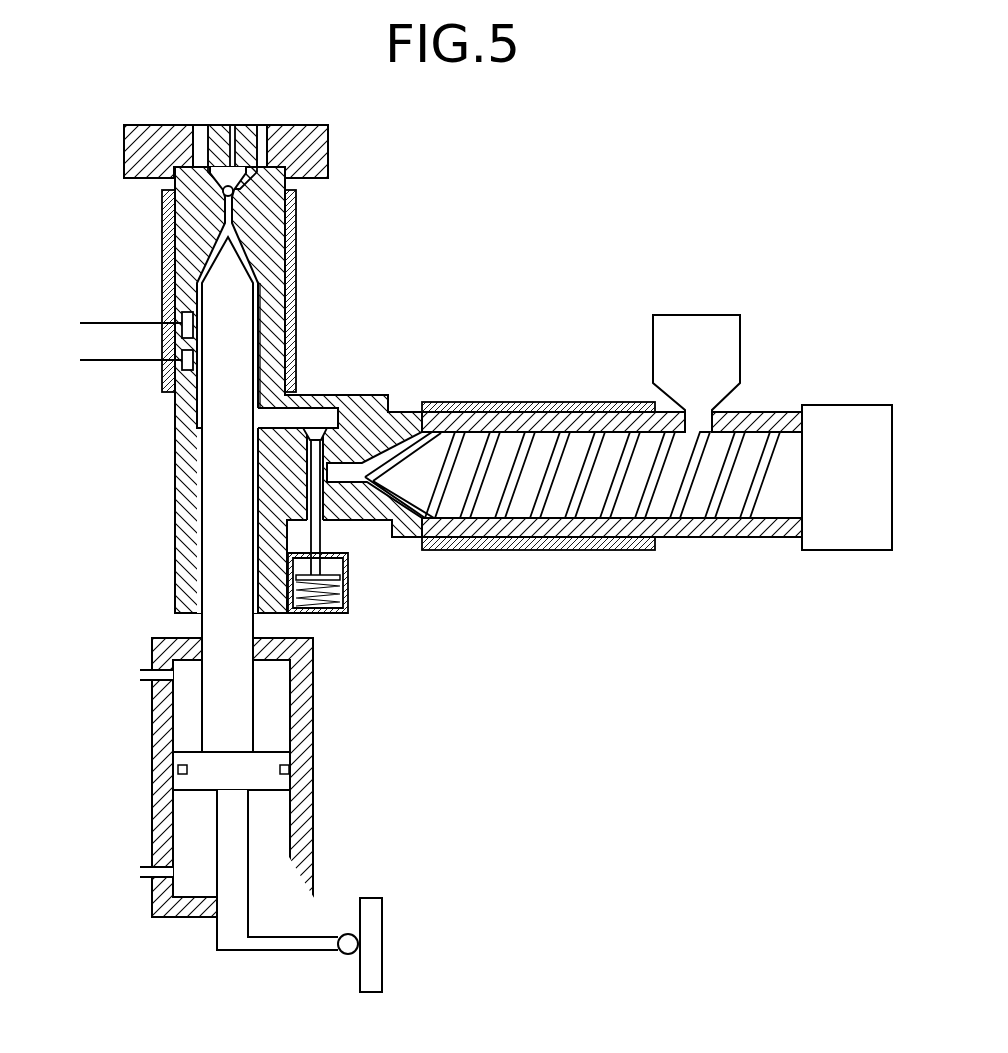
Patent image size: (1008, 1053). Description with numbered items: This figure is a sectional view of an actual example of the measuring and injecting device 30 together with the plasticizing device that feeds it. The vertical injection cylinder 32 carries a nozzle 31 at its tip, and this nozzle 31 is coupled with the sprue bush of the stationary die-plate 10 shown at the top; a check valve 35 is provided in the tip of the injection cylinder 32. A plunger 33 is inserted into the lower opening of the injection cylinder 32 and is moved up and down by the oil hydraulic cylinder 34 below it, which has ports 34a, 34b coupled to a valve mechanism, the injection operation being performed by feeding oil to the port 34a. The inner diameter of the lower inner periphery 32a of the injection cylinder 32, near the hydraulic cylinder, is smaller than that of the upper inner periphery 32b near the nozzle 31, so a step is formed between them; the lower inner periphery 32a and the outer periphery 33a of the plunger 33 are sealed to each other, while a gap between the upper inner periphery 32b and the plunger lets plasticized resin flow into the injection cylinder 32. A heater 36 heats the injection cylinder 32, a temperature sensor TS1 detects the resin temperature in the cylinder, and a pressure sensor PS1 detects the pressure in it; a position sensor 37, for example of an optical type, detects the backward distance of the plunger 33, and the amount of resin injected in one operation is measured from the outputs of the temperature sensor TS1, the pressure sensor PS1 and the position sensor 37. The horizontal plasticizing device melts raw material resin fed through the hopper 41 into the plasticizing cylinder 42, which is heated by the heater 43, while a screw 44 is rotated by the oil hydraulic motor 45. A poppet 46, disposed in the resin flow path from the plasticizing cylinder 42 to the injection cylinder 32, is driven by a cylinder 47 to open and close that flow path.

The stationary die-plate 10 is at (333, 160).
The nozzle 31 is at (205, 150).
The injection cylinder 32 is at (173, 497).
The lower inner periphery 32a is at (203, 455).
The upper inner periphery 32b is at (250, 314).
The plunger 33 is at (215, 625).
The outer periphery of the plunger 33a is at (260, 530).
The oil hydraulic cylinder 34 is at (152, 715).
The port 34a is at (152, 877).
The port 34b is at (150, 676).
The check valve 35 is at (235, 193).
The heater 36 is at (164, 247).
The position sensor 37 is at (383, 963).
The hopper 41 is at (742, 337).
The plasticizing cylinder 42 is at (730, 550).
The heater 43 is at (607, 555).
The screw 44 is at (580, 445).
The oil hydraulic motor 45 is at (852, 552).
The poppet 46 is at (317, 425).
The cylinder 47 is at (345, 555).
The measuring and injecting device 30 is at (182, 942).
The temperature sensor TS1 is at (170, 304).
The pressure sensor PS1 is at (178, 367).